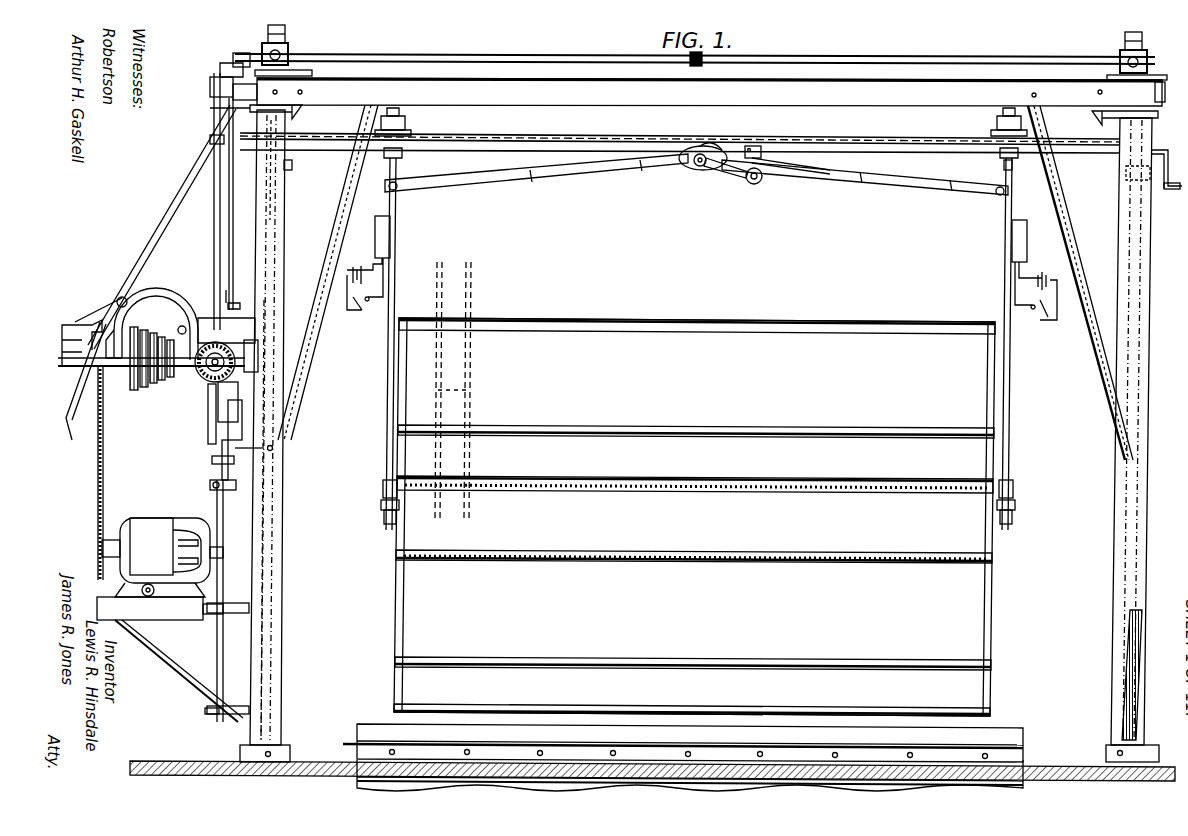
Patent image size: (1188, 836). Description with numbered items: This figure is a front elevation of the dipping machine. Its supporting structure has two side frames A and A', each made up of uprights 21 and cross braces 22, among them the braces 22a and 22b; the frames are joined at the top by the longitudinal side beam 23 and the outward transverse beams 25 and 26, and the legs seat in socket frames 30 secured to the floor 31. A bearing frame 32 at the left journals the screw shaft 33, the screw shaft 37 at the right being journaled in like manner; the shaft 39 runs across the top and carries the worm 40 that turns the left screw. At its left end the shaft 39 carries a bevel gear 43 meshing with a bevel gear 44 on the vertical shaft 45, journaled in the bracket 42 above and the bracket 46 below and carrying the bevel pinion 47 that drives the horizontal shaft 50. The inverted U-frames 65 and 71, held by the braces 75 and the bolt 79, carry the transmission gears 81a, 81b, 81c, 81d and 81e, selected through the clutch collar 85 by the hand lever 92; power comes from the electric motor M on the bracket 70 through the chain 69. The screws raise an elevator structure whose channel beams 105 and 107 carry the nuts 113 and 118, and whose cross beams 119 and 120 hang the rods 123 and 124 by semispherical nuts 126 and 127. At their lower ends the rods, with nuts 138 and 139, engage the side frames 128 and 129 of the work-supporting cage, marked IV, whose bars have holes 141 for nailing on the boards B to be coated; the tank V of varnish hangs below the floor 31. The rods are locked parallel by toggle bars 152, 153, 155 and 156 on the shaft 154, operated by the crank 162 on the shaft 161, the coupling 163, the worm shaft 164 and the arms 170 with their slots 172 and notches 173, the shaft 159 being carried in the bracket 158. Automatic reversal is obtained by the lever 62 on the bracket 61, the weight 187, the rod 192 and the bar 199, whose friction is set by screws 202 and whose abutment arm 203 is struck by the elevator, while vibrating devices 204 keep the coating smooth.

The upright 21 is at (270, 562).
The cross brace 22 is at (238, 600).
The cross brace 22a is at (311, 294).
The rod connection 22b is at (276, 448).
The longitudinal side beam 23 is at (898, 90).
The outward transverse beam 25 is at (208, 108).
The outward transverse beam 26 is at (1165, 98).
The socket frame 30 is at (278, 753).
The floor 31 is at (1060, 778).
The bearing fitting or frame 32 is at (264, 44).
The screw shaft 33 is at (268, 654).
The screw shaft 37 is at (1118, 652).
The shaft 39 is at (806, 65).
The worm 40 is at (290, 55).
The bearing bracket 42 is at (208, 92).
The bevel gear 43 is at (228, 50).
The bevel gear 44 is at (218, 68).
The vertical shaft 45 is at (212, 128).
The bracket 46 is at (236, 303).
The bevel pinion 47 is at (210, 342).
The horizontal shaft 50 is at (205, 378).
The bracket 61 is at (244, 428).
The lever 62 is at (214, 420).
The inverted U-frame 65 is at (110, 295).
The chain 69 is at (104, 460).
The supporting bracket 70 is at (188, 612).
The inverted U-frame 71 is at (88, 322).
The brace 75 is at (178, 237).
The bolt 79 is at (122, 296).
The transmission gear 81a is at (134, 390).
The transmission gear 81b is at (144, 387).
The transmission gear 81c is at (154, 383).
The transmission gear 81d is at (162, 380).
The transmission gear 81e is at (171, 377).
The clutch collar 85 is at (86, 371).
The hand lever 92 is at (77, 431).
The longitudinal channel beam 105 is at (872, 144).
The transverse channel beam 107 is at (293, 166).
The nut or threaded hub 113 is at (285, 182).
The nut 118 is at (1124, 180).
The cross beam 119 is at (411, 126).
The cross beam 120 is at (996, 124).
The rod 123 is at (1000, 350).
The rod 124 is at (1000, 380).
The upper nut 126 is at (398, 112).
The lower nut 127 is at (402, 156).
The side frame 128 is at (395, 604).
The side frame 129 is at (992, 612).
The nut 138 is at (382, 490).
The nut 139 is at (380, 514).
The holes 141 is at (1120, 58).
The bar 152 is at (545, 180).
The bar 153 is at (882, 185).
The shaft 154 is at (700, 166).
The bar 155 is at (600, 175).
The bar 156 is at (935, 188).
The bearing bracket 158 is at (766, 152).
The shaft 159 is at (757, 184).
The shaft 161 is at (1172, 160).
The crank 162 is at (1172, 198).
The coupling 163 is at (1078, 172).
The shaft 164 is at (818, 176).
The arm 170 is at (732, 175).
The slot 172 is at (688, 148).
The notch 173 is at (708, 148).
The weight 187 is at (258, 356).
The rod 192 is at (236, 486).
The vertical bar 199 is at (234, 462).
The screw 202 is at (208, 145).
The abutment arm 203 is at (236, 712).
The vibrating device 204 is at (373, 243).
The side frame A is at (288, 511).
The side frame A' is at (1109, 429).
The boards B is at (470, 392).
The door IV is at (672, 589).
The tank V is at (1020, 766).
The electric motor M is at (162, 557).